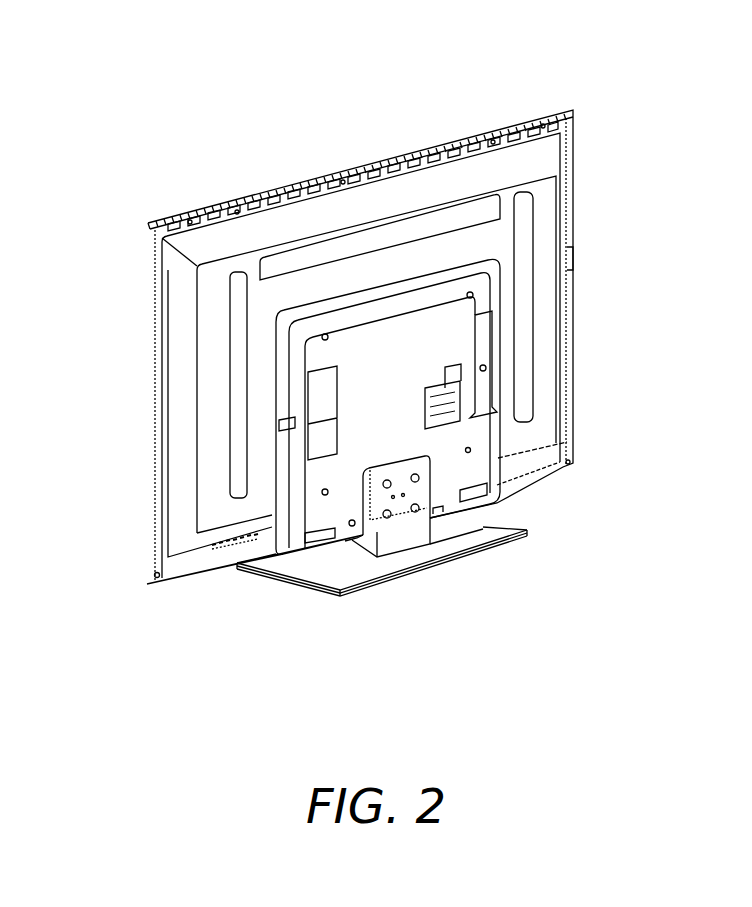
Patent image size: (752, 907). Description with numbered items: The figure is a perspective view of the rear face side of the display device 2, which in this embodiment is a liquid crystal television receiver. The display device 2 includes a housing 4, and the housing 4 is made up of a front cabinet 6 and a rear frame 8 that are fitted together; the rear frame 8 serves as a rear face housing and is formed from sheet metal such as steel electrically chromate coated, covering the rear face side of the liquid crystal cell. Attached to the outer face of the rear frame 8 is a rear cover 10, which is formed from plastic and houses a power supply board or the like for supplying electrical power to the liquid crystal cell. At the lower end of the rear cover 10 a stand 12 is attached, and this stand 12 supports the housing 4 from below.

The display device 2 is at (566, 79).
The housing 4 is at (78, 297).
The front cabinet 6 is at (150, 304).
The rear frame 8 is at (188, 330).
The rear cover 10 is at (462, 317).
The stand 12 is at (447, 514).